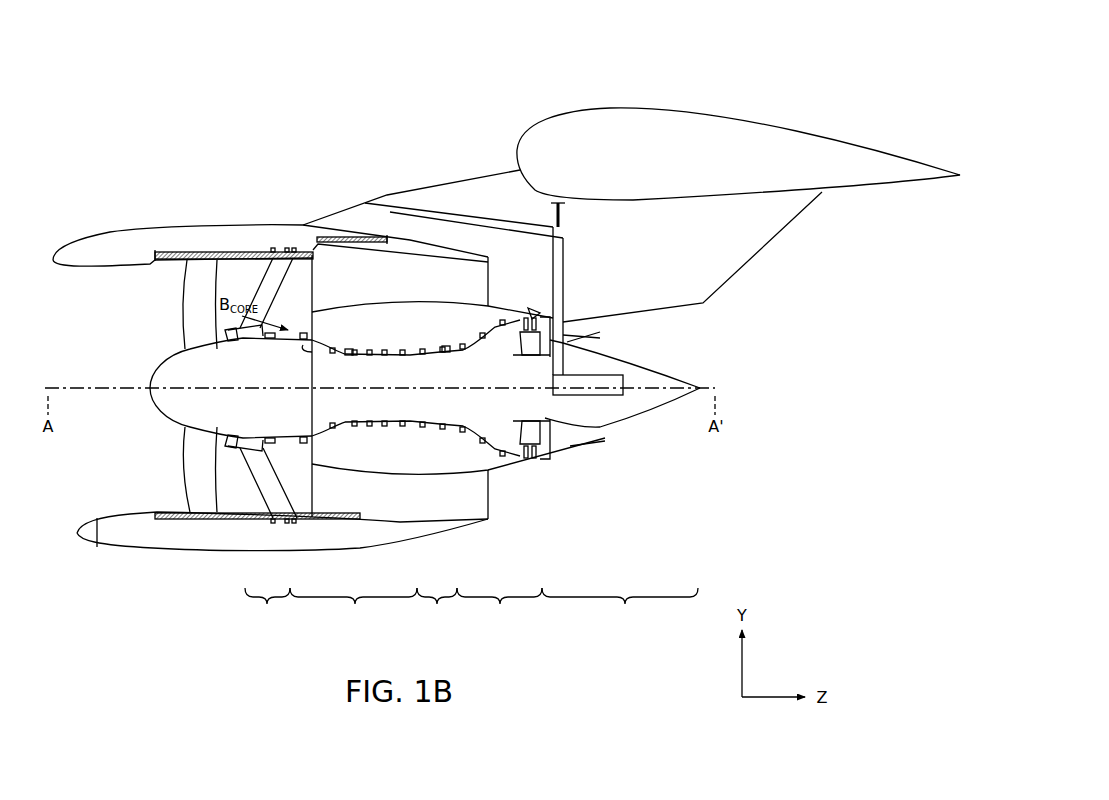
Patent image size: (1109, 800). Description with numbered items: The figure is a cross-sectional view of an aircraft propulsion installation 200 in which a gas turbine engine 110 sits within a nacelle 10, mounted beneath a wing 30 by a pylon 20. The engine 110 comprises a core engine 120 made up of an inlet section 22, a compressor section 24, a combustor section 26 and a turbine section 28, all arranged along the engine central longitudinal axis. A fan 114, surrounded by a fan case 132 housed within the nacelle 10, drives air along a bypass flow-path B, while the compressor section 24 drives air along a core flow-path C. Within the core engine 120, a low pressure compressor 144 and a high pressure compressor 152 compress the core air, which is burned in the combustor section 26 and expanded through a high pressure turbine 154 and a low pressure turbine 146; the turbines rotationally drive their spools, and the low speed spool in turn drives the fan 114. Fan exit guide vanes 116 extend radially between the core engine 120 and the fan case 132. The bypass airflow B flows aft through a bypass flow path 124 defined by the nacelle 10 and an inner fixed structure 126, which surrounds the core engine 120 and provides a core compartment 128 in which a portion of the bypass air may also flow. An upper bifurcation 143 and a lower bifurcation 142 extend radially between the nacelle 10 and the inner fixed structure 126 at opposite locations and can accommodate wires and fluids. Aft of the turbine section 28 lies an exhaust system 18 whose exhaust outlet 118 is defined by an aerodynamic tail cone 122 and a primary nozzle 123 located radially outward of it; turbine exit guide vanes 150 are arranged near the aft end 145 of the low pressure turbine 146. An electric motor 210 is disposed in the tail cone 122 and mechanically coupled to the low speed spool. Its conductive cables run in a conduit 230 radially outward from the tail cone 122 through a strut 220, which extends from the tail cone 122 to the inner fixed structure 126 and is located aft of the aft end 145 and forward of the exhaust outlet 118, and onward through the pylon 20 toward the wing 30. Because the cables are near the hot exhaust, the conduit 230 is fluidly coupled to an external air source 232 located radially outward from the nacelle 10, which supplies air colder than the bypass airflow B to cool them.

The aircraft propulsion system 200 is at (778, 63).
The nacelle 10 is at (376, 388).
The pylon 20 is at (562, 246).
The wing 30 is at (738, 154).
The external air source 232 is at (384, 196).
The conduit 230 is at (566, 292).
The strut 220 is at (570, 325).
The electric motor 210 is at (588, 385).
The exhaust outlet 118 is at (597, 341).
The upper bifurcation 143 is at (462, 263).
The lower bifurcation 142 is at (462, 518).
The fan case 132 is at (177, 518).
The fan 114 is at (185, 462).
The fan exit guide vanes 116 is at (274, 492).
The gas turbine engine 110 is at (128, 381).
The core engine 120 is at (406, 350).
The low pressure compressor 144 is at (310, 345).
The high pressure compressor 152 is at (352, 357).
The high pressure turbine 154 is at (446, 356).
The low pressure turbine 146 is at (505, 336).
The aft end 145 is at (536, 362).
The turbine exit guide vanes 150 is at (526, 426).
The inner fixed structure 126 is at (503, 468).
The core compartment 128 is at (405, 459).
The bypass flow path 124 is at (405, 494).
The tail cone 122 is at (627, 410).
The primary nozzle 123 is at (595, 446).
The inlet section 22 is at (267, 610).
The compressor section 24 is at (353, 610).
The combustor section 26 is at (437, 610).
The turbine section 28 is at (499, 610).
The exhaust system 18 is at (620, 610).
The bypass flow-path B is at (156, 296).
The core flow-path C is at (248, 340).